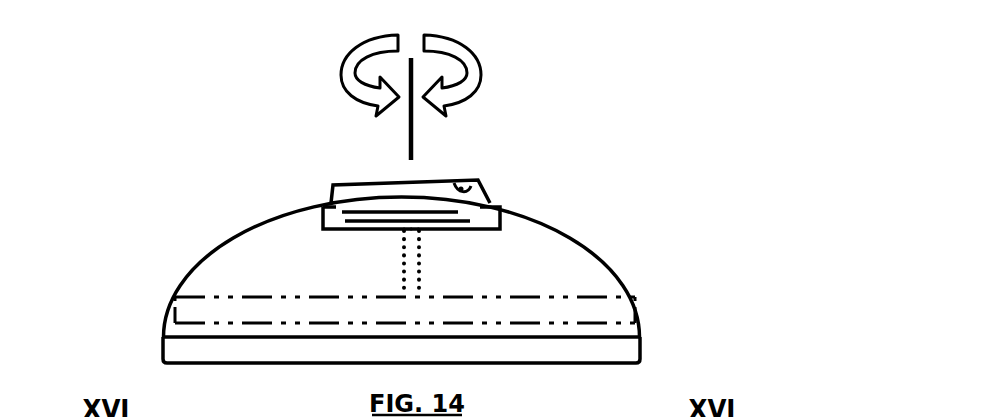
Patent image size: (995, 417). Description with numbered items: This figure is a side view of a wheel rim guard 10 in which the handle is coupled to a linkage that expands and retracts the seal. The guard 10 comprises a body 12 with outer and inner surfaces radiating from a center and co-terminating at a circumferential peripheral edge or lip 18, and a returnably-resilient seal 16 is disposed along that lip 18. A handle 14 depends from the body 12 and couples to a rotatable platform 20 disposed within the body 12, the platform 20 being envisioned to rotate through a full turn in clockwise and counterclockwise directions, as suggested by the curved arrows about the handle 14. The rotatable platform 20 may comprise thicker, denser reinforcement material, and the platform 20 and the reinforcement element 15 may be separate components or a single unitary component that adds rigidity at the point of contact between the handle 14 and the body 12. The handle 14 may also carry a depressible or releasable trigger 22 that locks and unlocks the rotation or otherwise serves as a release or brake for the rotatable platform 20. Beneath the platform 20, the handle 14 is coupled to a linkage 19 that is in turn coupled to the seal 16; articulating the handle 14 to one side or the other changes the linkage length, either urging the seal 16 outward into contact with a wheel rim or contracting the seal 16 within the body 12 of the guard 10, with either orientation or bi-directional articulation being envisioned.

The wheel rim guard 10 is at (112, 189).
The body 12 is at (535, 258).
The handle 14 is at (400, 183).
The reinforcement element 15 is at (463, 221).
The returnably-resilient seal 16 is at (245, 304).
The circumferential peripheral edge or lip 18 is at (661, 331).
The linkage 19 is at (404, 263).
The rotatable platform 20 is at (323, 208).
The trigger 22 is at (462, 184).